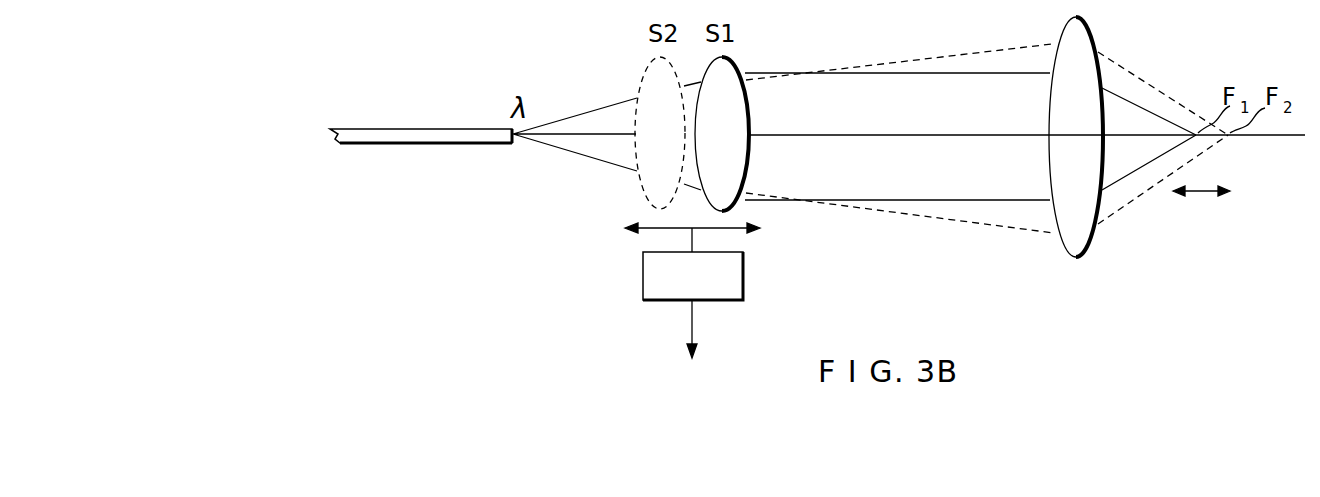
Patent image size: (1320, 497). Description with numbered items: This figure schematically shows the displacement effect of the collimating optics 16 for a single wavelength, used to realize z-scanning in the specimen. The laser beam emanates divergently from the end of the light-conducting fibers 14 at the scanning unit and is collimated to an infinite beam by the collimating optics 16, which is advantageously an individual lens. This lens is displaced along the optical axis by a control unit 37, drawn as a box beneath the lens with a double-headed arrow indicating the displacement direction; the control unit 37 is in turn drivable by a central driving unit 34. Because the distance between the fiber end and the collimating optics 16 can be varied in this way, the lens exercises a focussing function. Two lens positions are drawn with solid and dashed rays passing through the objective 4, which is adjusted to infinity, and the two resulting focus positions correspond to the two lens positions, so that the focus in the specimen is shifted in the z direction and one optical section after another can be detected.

The light-conducting fibers 14 is at (398, 128).
The collimating optics 16 is at (737, 73).
The objective 4 is at (1095, 45).
The local driving unit for collimating optics 37 is at (745, 288).
The central driving unit 34 is at (694, 345).